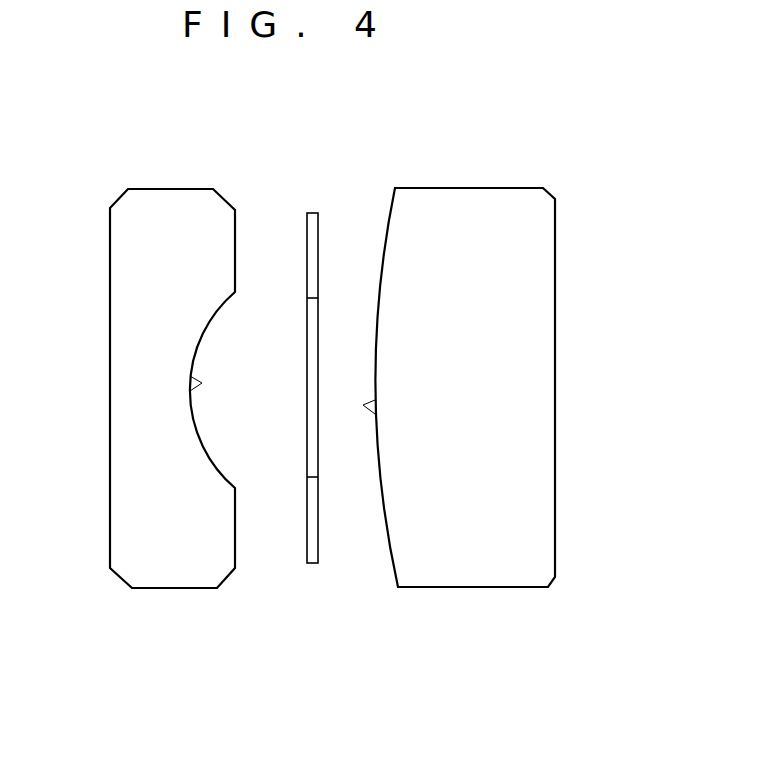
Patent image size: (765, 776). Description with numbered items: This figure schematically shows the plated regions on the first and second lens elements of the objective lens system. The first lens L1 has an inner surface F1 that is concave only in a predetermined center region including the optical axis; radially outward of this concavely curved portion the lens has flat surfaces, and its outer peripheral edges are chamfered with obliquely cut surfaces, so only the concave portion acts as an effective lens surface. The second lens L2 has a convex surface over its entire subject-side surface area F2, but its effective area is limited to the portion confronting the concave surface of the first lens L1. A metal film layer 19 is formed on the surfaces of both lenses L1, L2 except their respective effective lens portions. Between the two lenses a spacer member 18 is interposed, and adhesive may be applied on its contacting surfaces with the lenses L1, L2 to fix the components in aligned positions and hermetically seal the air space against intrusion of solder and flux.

The first lens L1 is at (169, 566).
The second lens L2 is at (481, 204).
The spacer member 18 is at (307, 228).
The metal film layer 19 is at (244, 188).
The inner surface of the first lens F1 is at (190, 376).
The surface of the second lens F2 is at (375, 400).